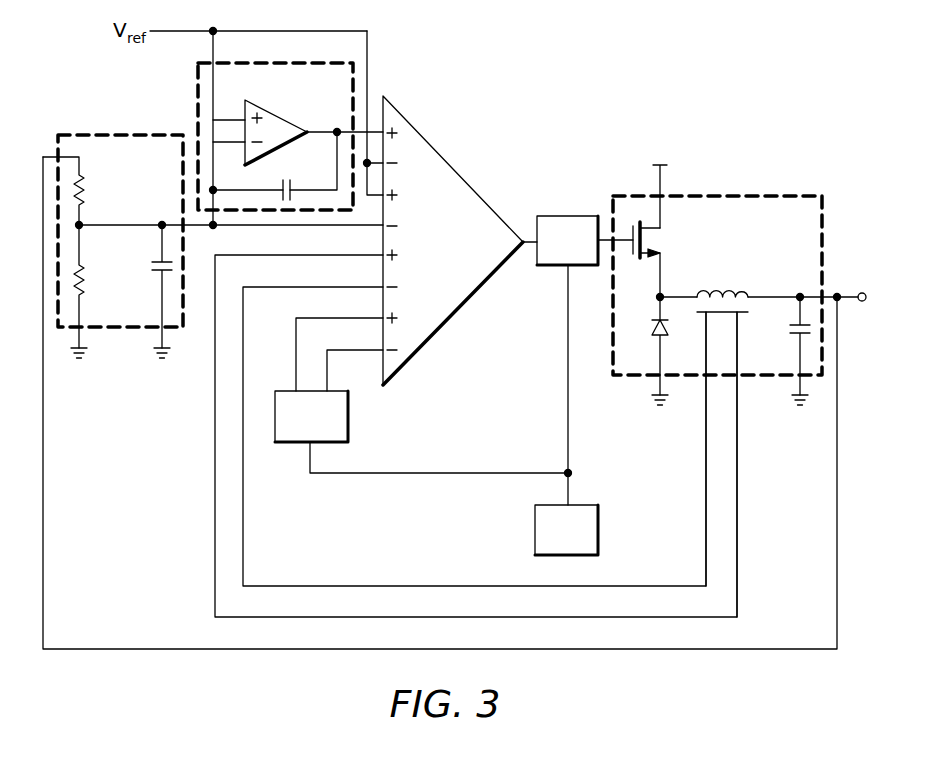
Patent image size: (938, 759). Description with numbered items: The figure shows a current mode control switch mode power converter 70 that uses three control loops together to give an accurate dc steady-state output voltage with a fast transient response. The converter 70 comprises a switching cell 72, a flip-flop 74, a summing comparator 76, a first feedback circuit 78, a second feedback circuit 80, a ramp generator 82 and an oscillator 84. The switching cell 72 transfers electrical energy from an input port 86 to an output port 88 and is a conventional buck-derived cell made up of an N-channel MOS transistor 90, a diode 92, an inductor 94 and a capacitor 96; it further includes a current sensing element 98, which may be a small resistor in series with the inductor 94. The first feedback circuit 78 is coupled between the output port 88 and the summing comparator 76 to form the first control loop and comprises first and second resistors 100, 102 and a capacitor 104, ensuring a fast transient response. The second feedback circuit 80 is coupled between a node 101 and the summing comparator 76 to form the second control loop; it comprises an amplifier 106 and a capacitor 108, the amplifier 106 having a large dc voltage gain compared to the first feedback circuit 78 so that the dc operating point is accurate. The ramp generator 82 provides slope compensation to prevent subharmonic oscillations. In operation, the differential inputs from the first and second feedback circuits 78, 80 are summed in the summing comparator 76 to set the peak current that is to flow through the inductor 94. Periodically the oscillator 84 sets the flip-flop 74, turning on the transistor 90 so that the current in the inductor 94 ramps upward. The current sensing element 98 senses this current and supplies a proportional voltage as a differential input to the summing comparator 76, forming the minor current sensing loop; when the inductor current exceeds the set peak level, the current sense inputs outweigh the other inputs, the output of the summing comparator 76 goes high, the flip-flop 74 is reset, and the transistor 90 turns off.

The current mode control switch mode power converter 70 is at (612, 78).
The switching cell 72 is at (772, 196).
The flip-flop 74 is at (570, 216).
The summing comparator 76 is at (455, 168).
The first feedback circuit 78 is at (102, 135).
The second feedback circuit 80 is at (198, 88).
The ramp generator 82 is at (299, 433).
The oscillator 84 is at (555, 543).
The input port 86 is at (664, 180).
The output port 88 is at (848, 292).
The N-channel MOS transistor 90 is at (652, 240).
The diode 92 is at (655, 330).
The inductor 94 is at (733, 290).
The capacitor 96 is at (790, 330).
The current sensing element 98 is at (700, 315).
The first resistor 100 is at (85, 188).
The node 101 is at (85, 222).
The second resistor 102 is at (85, 282).
The capacitor 104 is at (150, 262).
The amplifier 106 is at (275, 112).
The capacitor 108 is at (291, 180).